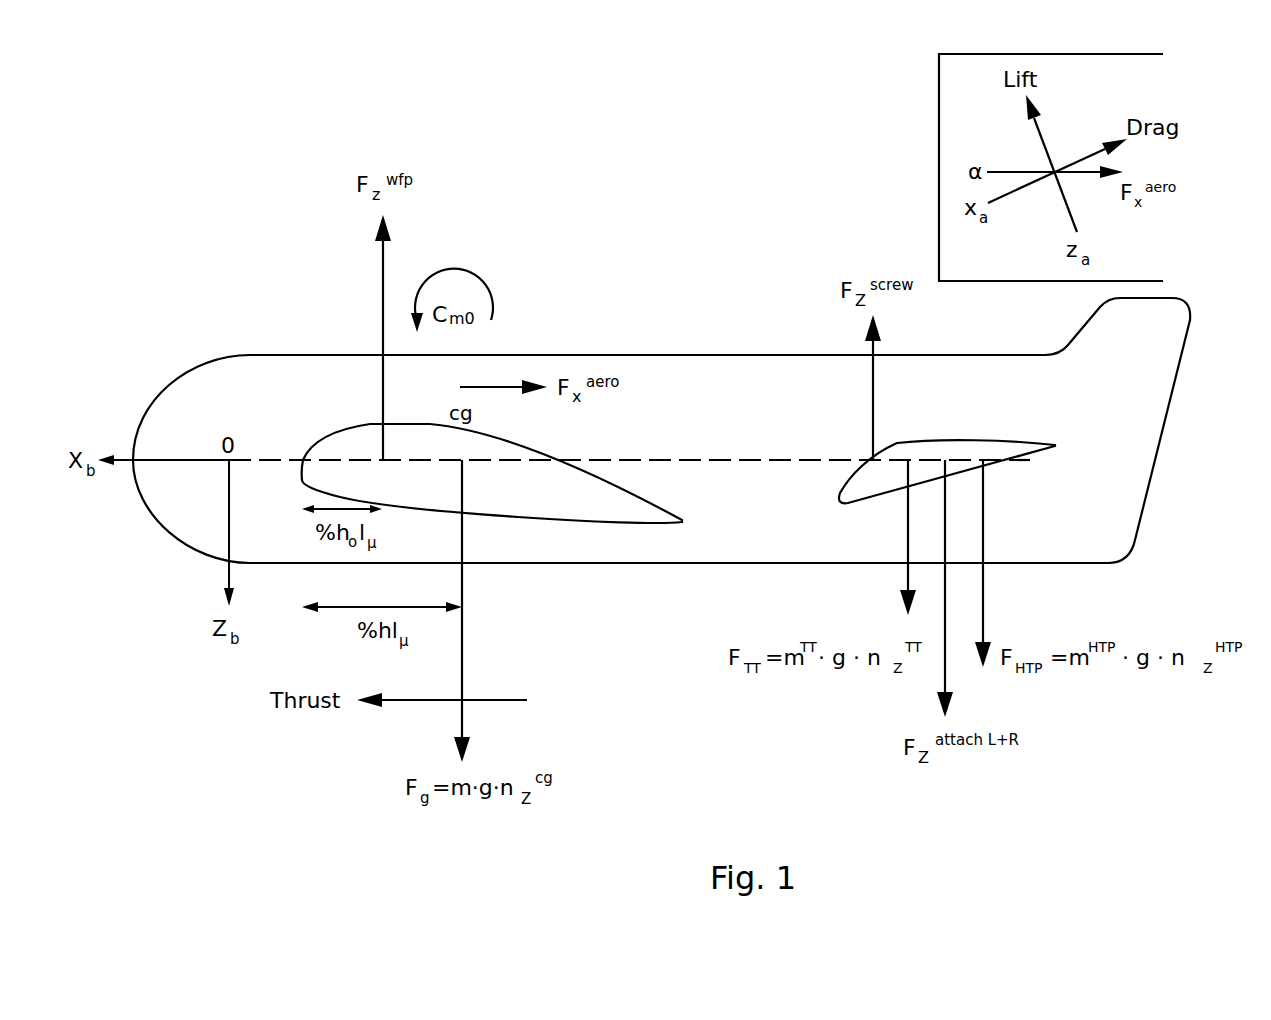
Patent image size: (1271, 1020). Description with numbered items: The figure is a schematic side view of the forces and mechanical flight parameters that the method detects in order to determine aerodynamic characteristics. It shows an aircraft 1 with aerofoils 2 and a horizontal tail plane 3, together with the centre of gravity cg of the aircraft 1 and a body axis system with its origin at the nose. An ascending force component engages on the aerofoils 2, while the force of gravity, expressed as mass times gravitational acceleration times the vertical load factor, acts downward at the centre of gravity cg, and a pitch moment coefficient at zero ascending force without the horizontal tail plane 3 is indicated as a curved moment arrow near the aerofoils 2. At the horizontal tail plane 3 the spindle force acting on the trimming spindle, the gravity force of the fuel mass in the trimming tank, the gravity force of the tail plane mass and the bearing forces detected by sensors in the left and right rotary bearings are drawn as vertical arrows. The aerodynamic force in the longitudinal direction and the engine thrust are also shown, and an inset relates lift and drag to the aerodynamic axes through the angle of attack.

The aircraft 1 is at (661, 430).
The aerofoils 2 is at (618, 481).
The horizontal tail plane 3 is at (1015, 442).